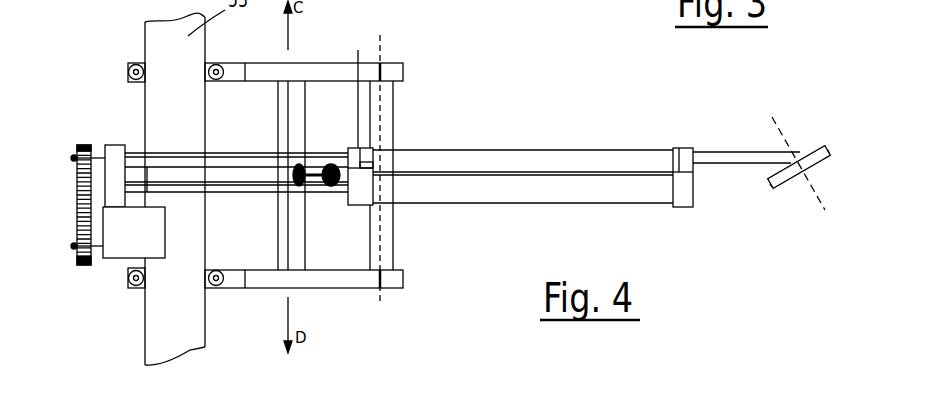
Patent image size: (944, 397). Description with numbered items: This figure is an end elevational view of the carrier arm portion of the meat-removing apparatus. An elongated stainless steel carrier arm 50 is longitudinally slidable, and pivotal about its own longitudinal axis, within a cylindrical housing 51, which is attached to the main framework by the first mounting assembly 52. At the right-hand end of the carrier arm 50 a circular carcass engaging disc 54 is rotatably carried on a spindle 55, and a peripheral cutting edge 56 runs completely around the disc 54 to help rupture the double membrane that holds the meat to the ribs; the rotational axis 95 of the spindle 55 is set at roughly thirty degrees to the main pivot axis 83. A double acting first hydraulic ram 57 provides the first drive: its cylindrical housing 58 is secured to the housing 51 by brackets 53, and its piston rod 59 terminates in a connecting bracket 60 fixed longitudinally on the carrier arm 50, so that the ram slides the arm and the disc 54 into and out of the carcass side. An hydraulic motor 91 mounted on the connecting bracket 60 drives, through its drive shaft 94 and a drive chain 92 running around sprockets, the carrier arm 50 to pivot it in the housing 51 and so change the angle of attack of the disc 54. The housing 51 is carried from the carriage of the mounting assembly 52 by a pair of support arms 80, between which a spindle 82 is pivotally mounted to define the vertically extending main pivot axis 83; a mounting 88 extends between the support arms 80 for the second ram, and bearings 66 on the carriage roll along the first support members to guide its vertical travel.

The carrier arm 50 is at (172, 153).
The cylindrical housing 51 is at (585, 162).
The first mounting assembly 52 is at (506, 69).
The brackets 53 is at (680, 158).
The carcass engaging disc 54 is at (778, 192).
The spindle 55 is at (793, 148).
The peripheral cutting edge 56 is at (829, 153).
The first hydraulic ram 57 is at (533, 187).
The cylindrical housing 58 is at (628, 187).
The piston rod 59 is at (237, 183).
The connecting bracket 60 is at (110, 145).
The bearings 66 is at (132, 62).
The support arms 80 is at (322, 72).
The spindle 82 is at (392, 100).
The main pivot axis 83 is at (382, 52).
The mounting 88 is at (298, 108).
The hydraulic motor 91 is at (113, 226).
The drive chain 92 is at (77, 185).
The drive shaft 94 is at (95, 245).
The rotational axis 95 is at (820, 198).